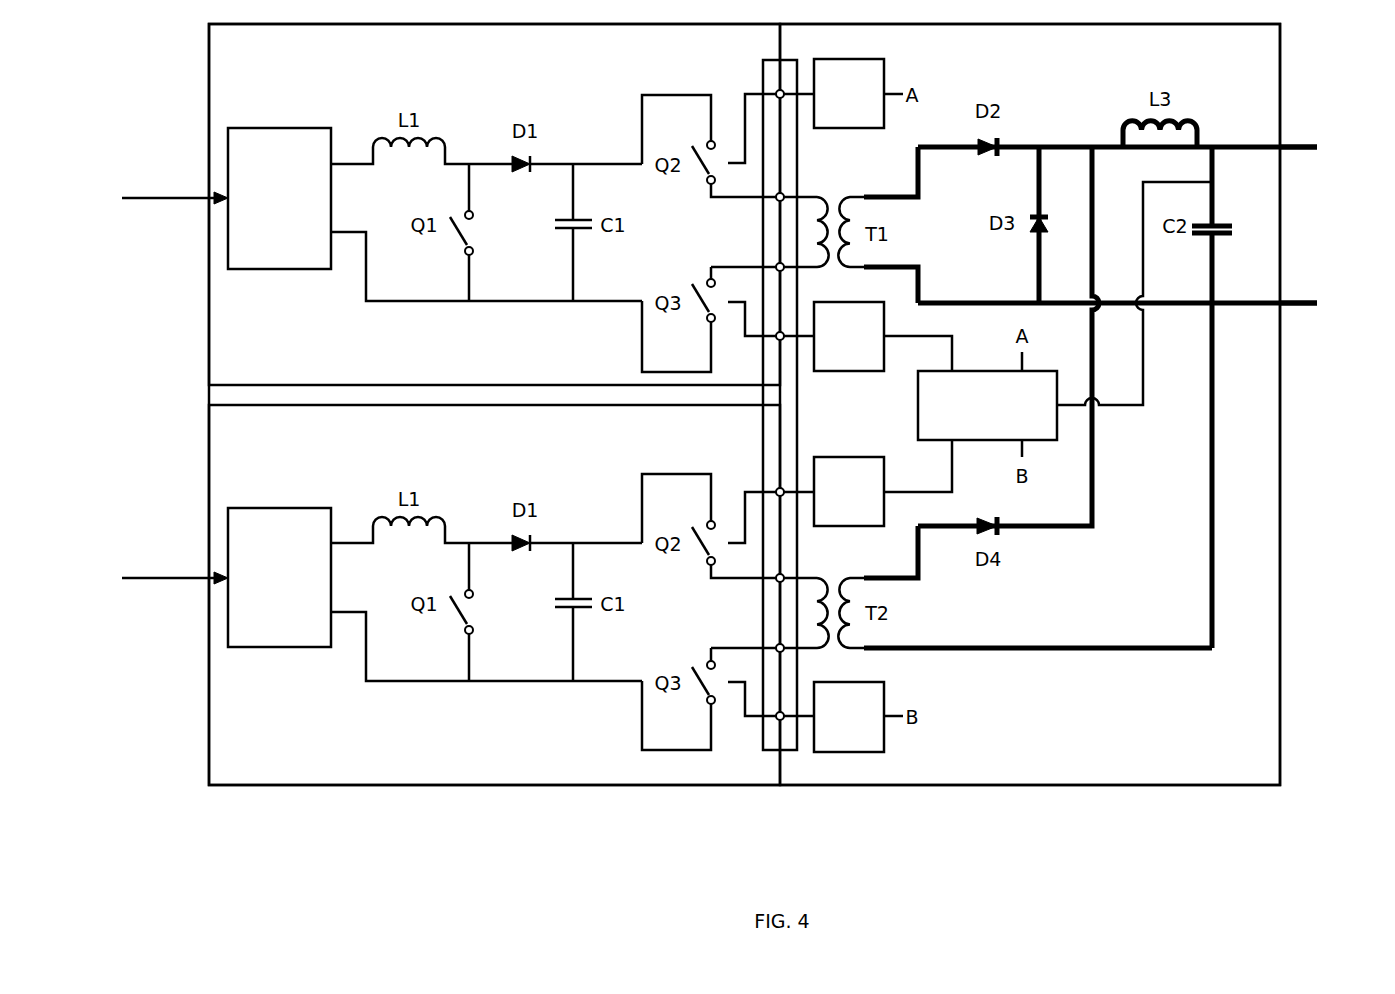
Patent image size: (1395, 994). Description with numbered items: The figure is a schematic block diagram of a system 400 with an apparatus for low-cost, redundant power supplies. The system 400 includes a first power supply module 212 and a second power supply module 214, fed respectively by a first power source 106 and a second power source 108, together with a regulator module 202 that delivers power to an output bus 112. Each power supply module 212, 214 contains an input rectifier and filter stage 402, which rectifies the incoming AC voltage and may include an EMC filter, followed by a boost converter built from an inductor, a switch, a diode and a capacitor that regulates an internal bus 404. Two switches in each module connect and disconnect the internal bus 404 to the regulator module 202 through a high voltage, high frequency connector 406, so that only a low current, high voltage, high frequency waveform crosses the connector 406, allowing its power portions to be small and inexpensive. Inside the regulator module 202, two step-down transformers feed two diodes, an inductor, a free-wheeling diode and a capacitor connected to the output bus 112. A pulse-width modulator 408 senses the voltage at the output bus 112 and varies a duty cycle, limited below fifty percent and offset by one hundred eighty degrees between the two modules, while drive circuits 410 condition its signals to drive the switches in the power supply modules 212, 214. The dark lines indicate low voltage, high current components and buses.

The system 400 is at (200, 67).
The first power source 106 is at (123, 181).
The second power source 108 is at (123, 562).
The output bus 112 is at (1321, 247).
The regulator module 202 is at (1013, 84).
The first power supply module 212 is at (478, 84).
The second power supply module 214 is at (478, 464).
The input rectifier and filter stage 402 is at (279, 387).
The internal bus 404 is at (573, 530).
The high voltage, high frequency connector 406 is at (753, 742).
The pulse-width modulator 408 is at (971, 424).
The drive circuits 410 is at (832, 122).